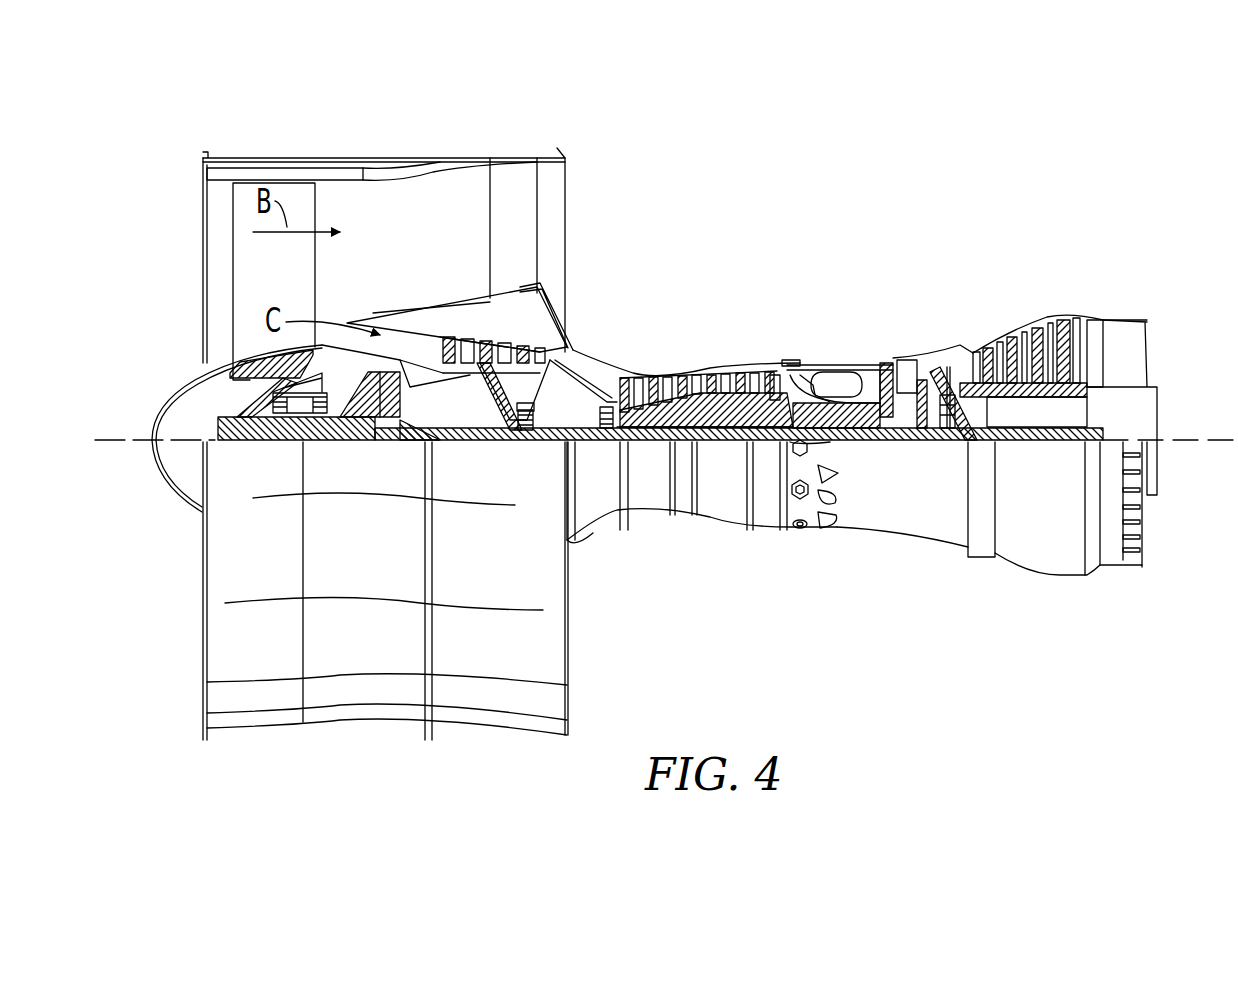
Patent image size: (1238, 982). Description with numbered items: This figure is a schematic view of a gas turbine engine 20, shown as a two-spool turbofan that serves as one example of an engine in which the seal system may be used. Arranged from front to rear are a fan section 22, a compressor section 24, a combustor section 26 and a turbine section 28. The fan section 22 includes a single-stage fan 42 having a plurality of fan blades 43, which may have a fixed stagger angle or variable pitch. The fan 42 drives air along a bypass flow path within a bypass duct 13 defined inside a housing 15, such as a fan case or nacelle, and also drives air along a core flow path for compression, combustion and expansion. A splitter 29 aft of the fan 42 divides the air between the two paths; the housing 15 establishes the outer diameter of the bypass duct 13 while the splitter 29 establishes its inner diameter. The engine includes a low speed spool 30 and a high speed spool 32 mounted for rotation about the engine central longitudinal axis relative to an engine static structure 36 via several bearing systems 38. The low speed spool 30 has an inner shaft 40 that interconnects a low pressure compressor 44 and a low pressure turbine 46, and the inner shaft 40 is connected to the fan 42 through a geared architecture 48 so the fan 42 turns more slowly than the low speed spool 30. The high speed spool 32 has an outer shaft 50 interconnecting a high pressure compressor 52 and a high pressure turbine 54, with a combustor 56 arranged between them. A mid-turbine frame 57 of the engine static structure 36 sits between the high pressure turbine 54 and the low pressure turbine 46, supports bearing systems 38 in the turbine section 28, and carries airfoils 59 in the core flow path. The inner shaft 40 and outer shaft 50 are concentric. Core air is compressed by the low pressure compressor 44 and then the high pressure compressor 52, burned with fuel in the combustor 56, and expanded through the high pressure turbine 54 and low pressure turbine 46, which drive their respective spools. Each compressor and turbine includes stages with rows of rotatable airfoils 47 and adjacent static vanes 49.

The bypass duct 13 is at (440, 188).
The housing 15 is at (385, 160).
The gas turbine engine 20 is at (852, 200).
The fan section 22 is at (314, 152).
The compressor section 24 is at (618, 346).
The combustor section 26 is at (838, 337).
The turbine section 28 is at (987, 300).
The splitter 29 is at (357, 312).
The low speed spool 30 is at (723, 448).
The high speed spool 32 is at (767, 380).
The engine static structure 36 is at (763, 533).
The bearing systems 38 is at (520, 423).
The inner shaft 40 is at (593, 442).
The fan 42 is at (288, 285).
The fan blades 43 is at (303, 288).
The low pressure compressor 44 is at (553, 296).
The low pressure turbine 46 is at (1033, 347).
The rotatable airfoils 47 is at (447, 340).
The geared architecture 48 is at (390, 423).
The vanes 49 is at (465, 343).
The outer shaft 50 is at (852, 437).
The high pressure compressor 52 is at (705, 372).
The high pressure turbine 54 is at (907, 373).
The combustor 56 is at (840, 382).
The mid-turbine frame 57 is at (950, 353).
The airfoils 59 is at (947, 370).